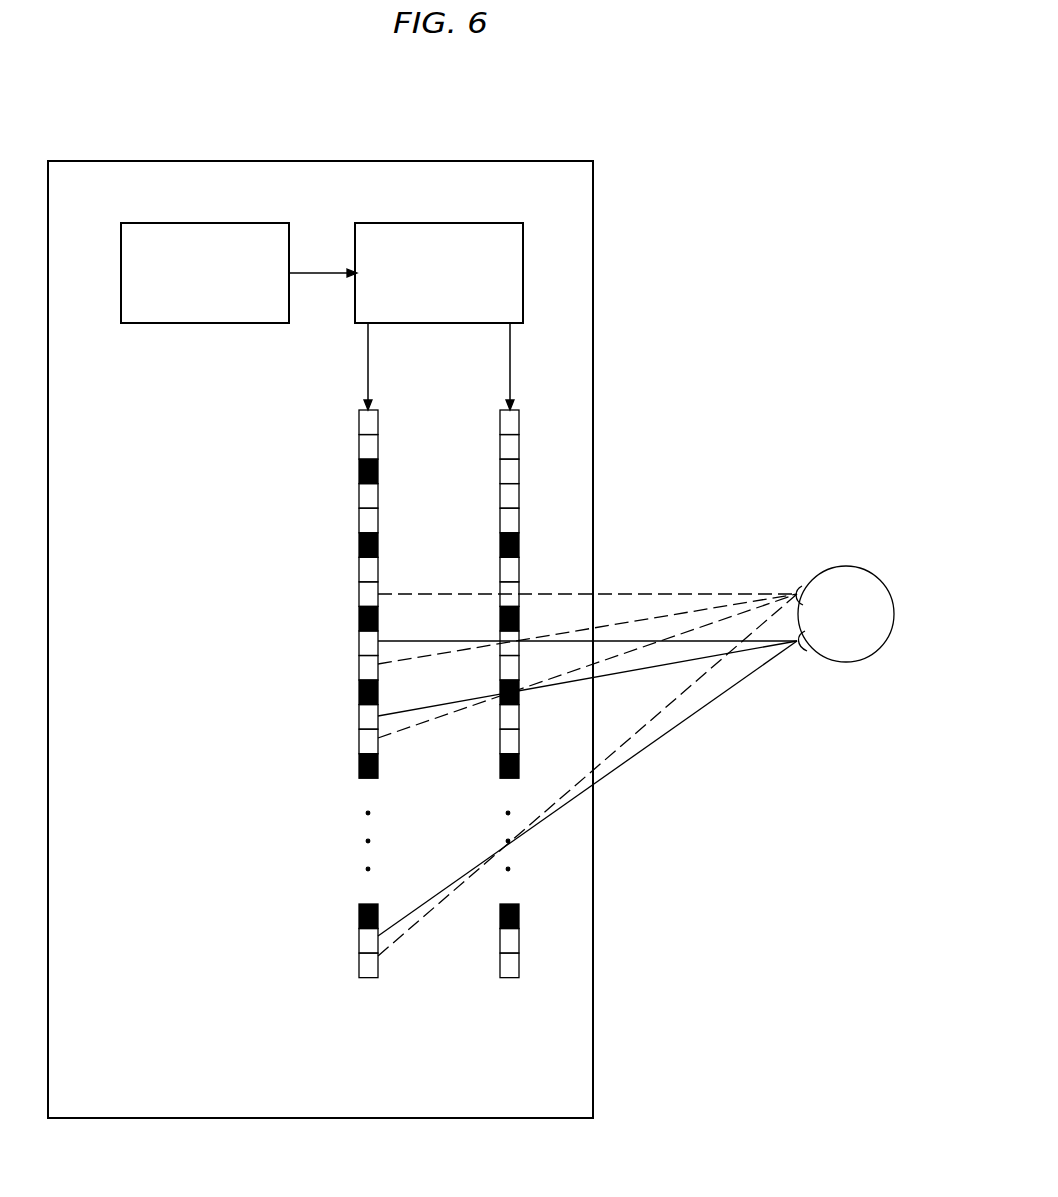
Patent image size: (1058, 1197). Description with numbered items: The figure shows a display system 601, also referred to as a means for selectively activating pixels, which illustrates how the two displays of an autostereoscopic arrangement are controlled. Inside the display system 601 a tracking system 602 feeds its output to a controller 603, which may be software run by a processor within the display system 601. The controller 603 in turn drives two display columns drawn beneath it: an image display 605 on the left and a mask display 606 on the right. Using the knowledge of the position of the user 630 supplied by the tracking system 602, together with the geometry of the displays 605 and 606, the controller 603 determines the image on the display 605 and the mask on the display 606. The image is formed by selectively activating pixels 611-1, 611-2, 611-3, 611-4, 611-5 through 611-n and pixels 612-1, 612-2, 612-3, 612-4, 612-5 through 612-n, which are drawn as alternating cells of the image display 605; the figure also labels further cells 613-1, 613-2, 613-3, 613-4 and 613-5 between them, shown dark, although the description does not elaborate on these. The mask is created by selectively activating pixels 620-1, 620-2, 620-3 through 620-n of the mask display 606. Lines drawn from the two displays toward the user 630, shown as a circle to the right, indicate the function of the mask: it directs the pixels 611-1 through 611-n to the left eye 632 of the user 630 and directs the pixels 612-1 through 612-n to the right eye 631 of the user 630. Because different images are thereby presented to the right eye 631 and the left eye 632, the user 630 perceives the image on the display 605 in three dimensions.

The display system 601 is at (440, 160).
The tracking system 602 is at (288, 223).
The controller 603 is at (522, 223).
The display 605 is at (345, 728).
The display 606 is at (498, 728).
The pixel 611-1 is at (357, 412).
The pixel 611-2 is at (357, 486).
The pixel 611-3 is at (357, 559).
The pixel 611-4 is at (357, 633).
The pixel 611-5 is at (357, 707).
The pixel 611-n is at (357, 930).
The pixel 612-1 is at (357, 437).
The pixel 612-2 is at (357, 510).
The pixel 612-3 is at (357, 584).
The pixel 612-4 is at (357, 658).
The pixel 612-5 is at (357, 731).
The pixel 612-n is at (357, 955).
The image display black pixel 613-1 is at (357, 461).
The image display black pixel 613-2 is at (357, 535).
The image display black pixel 613-3 is at (357, 608).
The image display black pixel 613-4 is at (357, 682).
The image display black pixel 613-5 is at (357, 756).
The pixel 620-1 is at (498, 412).
The pixel 620-2 is at (498, 437).
The pixel 620-3 is at (498, 461).
The pixel 620-n is at (498, 955).
The user 630 is at (860, 658).
The right eye 631 is at (799, 585).
The left eye 632 is at (800, 650).